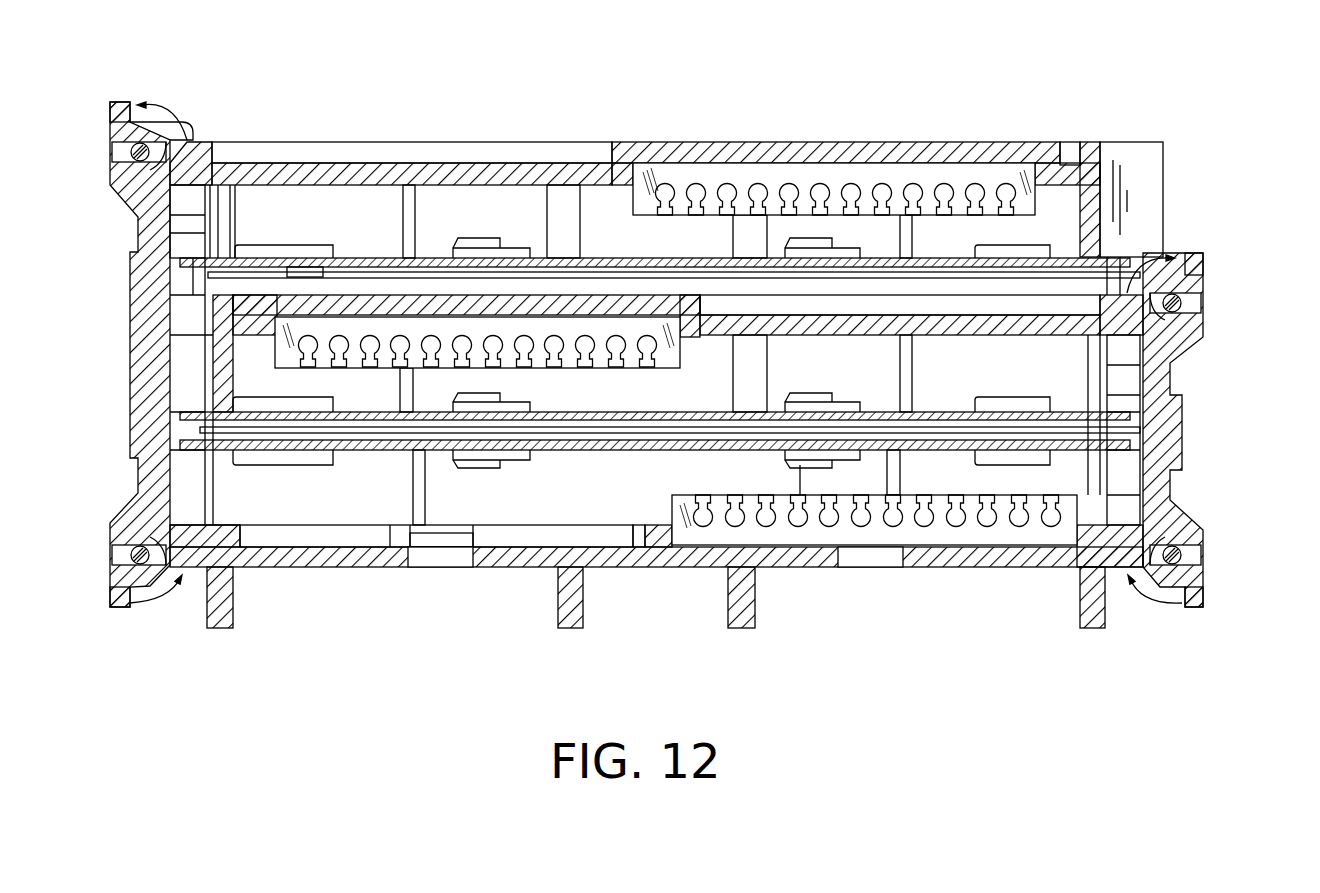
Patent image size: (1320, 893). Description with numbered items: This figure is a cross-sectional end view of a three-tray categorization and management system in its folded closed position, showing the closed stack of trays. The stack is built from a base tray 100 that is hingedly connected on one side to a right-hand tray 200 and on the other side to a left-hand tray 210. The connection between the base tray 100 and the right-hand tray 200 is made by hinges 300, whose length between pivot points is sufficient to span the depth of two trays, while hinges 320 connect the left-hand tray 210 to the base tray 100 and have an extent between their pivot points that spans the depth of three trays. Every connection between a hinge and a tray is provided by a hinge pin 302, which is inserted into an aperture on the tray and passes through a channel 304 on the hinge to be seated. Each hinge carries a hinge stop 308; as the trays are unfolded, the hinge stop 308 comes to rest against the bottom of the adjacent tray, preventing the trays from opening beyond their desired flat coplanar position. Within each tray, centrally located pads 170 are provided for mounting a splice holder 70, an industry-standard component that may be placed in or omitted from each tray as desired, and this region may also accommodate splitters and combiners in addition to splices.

The splice holder 70 is at (650, 212).
The base tray 100 is at (565, 597).
The pads 170 is at (540, 537).
The right-hand tray 200 is at (222, 372).
The left-hand tray 210 is at (698, 147).
The hinges 300 is at (1175, 423).
The hinge pin 302 is at (131, 151).
The channel 304 is at (118, 157).
The hinge stop 308 is at (120, 103).
The hinges 320 is at (146, 352).